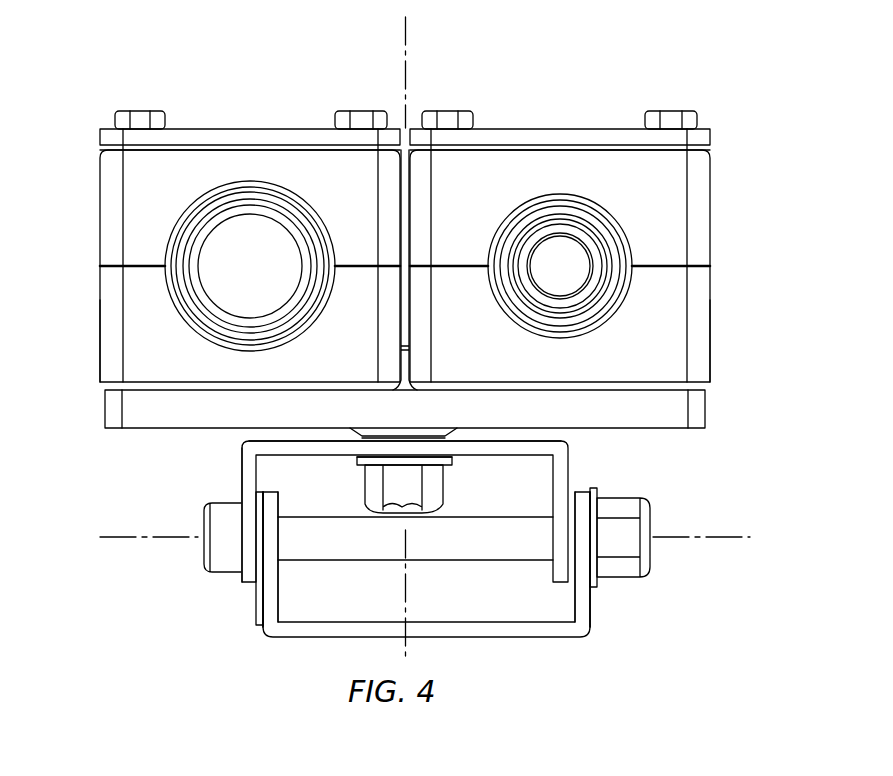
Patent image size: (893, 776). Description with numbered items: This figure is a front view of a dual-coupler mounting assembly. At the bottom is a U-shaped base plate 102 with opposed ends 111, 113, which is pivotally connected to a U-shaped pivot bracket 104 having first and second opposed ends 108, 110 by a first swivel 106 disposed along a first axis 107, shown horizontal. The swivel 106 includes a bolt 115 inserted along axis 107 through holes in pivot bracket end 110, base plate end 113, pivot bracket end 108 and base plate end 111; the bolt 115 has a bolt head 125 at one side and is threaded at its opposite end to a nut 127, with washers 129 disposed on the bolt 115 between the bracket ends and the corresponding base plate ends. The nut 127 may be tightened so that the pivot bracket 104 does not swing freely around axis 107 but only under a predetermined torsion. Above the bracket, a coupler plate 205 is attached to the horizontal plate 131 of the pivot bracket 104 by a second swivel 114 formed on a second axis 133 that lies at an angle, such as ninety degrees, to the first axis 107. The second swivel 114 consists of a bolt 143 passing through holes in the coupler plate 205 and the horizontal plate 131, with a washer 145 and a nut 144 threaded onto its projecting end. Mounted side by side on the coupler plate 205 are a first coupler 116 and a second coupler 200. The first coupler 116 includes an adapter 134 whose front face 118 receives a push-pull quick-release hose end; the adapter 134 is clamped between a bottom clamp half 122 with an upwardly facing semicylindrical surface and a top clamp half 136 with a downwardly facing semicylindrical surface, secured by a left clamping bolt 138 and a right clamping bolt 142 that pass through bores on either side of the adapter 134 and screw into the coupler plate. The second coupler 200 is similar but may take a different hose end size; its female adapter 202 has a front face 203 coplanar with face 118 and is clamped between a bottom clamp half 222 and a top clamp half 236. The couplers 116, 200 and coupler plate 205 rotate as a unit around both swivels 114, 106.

The base plate 102 is at (517, 640).
The pivot bracket 104 is at (243, 445).
The first swivel 106 is at (331, 578).
The first axis 107 is at (728, 535).
The first end of pivot bracket 108 is at (569, 478).
The second end of pivot bracket 110 is at (242, 487).
The base plate end 111 is at (592, 612).
The base plate end 113 is at (263, 612).
The second swivel 114 is at (466, 461).
The bolt 115 is at (497, 549).
The first coupler 116 is at (568, 122).
The front face 118 is at (545, 262).
The bottom clamp half 122 is at (680, 330).
The bolt head 125 is at (206, 526).
The nut 127 is at (623, 545).
The washers 129 is at (258, 547).
The horizontal plate 131 is at (560, 444).
The second axis 133 is at (406, 55).
The adapter 134 is at (575, 252).
The top clamp half 136 is at (680, 184).
The left clamping bolt 138 is at (140, 110).
The right clamping bolt 142 is at (360, 111).
The bolt 143 is at (407, 346).
The nut 144 is at (408, 495).
The washer 145 is at (358, 460).
The second coupler 200 is at (245, 122).
The female adapter 202 is at (283, 298).
The front face 203 is at (283, 246).
The coupler plate 205 is at (668, 405).
The bottom clamp half 222 is at (136, 330).
The top clamp half 236 is at (136, 184).